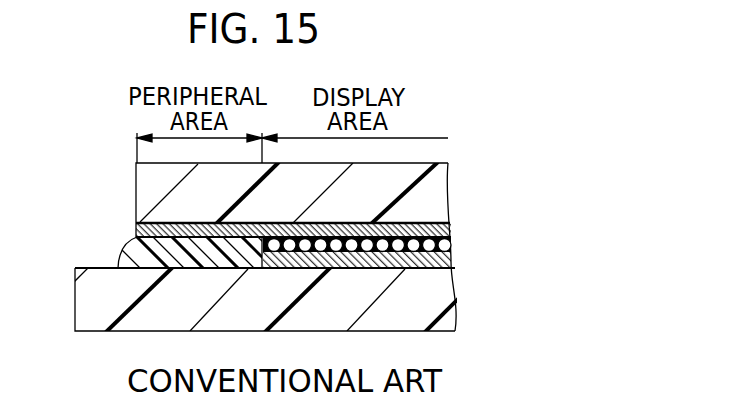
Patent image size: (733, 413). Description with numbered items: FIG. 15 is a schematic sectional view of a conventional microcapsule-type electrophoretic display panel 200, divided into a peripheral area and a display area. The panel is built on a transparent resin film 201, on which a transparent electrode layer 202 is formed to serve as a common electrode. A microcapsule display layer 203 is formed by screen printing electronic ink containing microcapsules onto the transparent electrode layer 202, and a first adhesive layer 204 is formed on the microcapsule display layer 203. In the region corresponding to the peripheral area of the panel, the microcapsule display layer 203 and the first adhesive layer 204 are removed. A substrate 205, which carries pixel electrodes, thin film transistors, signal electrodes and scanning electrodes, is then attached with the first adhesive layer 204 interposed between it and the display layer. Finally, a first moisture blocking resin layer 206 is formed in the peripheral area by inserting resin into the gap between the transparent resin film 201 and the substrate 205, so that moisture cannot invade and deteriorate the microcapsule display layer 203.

The microcapsule-type electrophoretic display panel 200 is at (512, 110).
The transparent resin film 201 is at (437, 190).
The transparent electrode layer 202 is at (448, 227).
The microcapsule display layer 203 is at (450, 247).
The first adhesive layer 204 is at (451, 266).
The substrate 205 is at (455, 300).
The first moisture blocking resin layer 206 is at (120, 254).